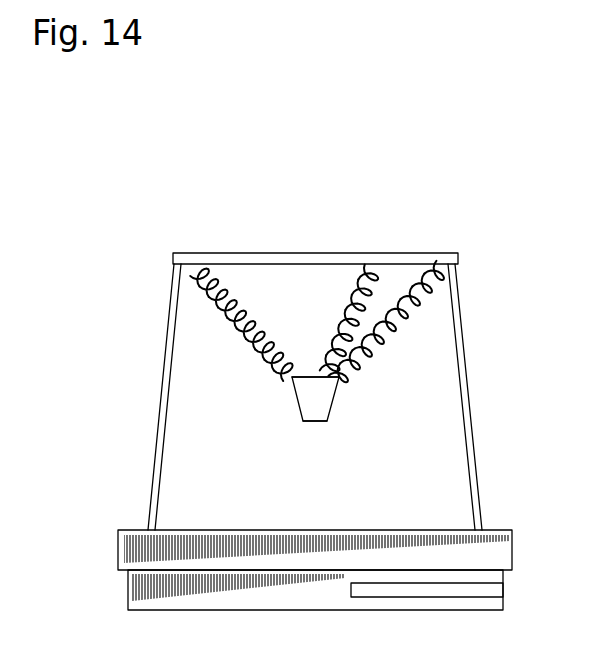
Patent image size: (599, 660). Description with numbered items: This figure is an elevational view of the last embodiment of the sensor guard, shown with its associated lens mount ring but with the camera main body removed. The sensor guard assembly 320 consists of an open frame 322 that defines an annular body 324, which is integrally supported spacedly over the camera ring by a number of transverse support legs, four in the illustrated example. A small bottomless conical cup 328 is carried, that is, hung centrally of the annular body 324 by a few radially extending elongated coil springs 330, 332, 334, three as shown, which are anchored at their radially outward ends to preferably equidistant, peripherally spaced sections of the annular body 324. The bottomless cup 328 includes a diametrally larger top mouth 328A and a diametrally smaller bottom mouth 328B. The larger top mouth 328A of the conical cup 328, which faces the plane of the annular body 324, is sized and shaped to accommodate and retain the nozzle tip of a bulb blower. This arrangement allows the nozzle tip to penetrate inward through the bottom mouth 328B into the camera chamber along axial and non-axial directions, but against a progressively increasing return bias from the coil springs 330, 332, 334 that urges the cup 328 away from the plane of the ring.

The sensor guard assembly 320 is at (268, 368).
The open frame 322 is at (168, 432).
The annular body 324 is at (214, 262).
The bottomless conical cup 328 is at (311, 438).
The top mouth 328A is at (312, 378).
The bottom mouth 328B is at (313, 421).
The coil spring 330 is at (233, 270).
The coil spring 332 is at (365, 262).
The coil spring 334 is at (433, 268).